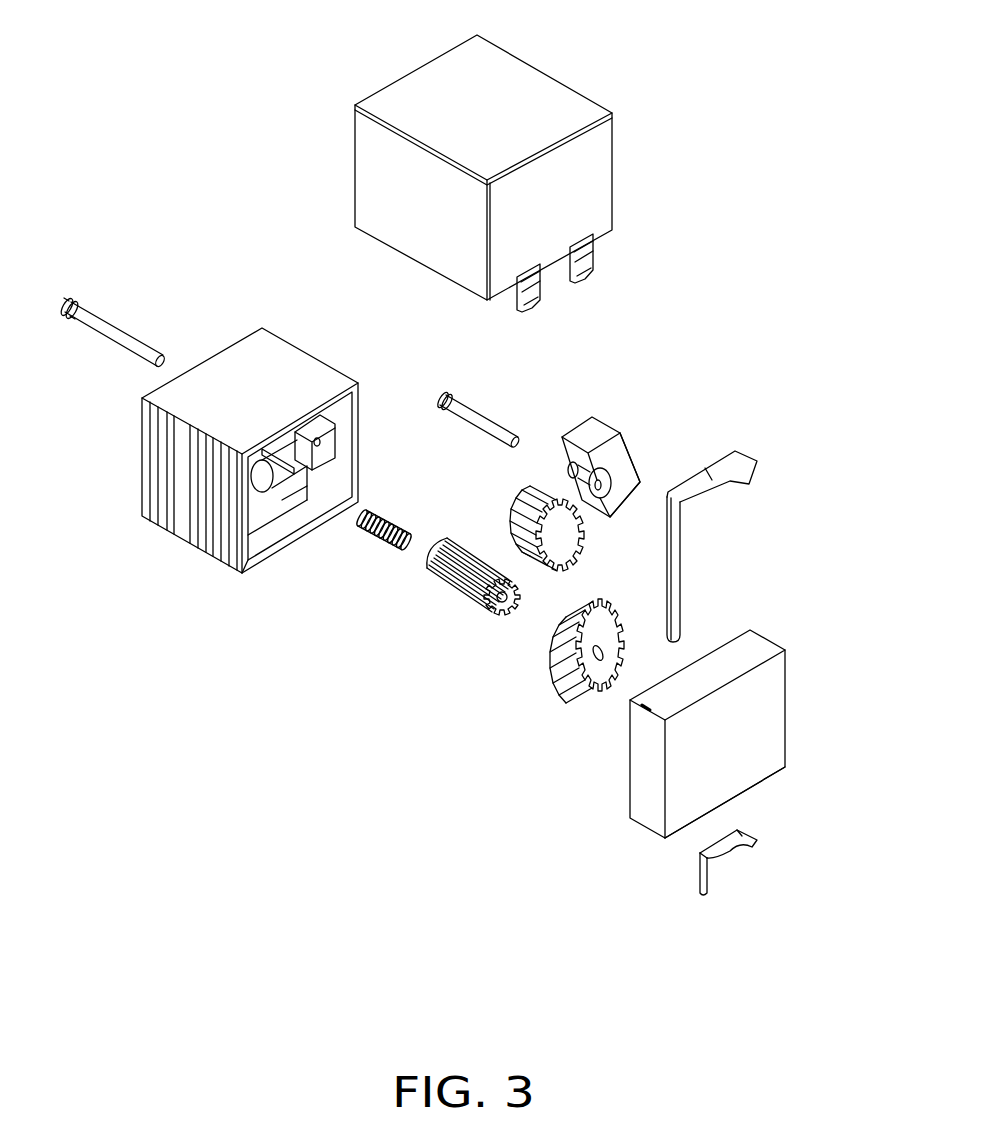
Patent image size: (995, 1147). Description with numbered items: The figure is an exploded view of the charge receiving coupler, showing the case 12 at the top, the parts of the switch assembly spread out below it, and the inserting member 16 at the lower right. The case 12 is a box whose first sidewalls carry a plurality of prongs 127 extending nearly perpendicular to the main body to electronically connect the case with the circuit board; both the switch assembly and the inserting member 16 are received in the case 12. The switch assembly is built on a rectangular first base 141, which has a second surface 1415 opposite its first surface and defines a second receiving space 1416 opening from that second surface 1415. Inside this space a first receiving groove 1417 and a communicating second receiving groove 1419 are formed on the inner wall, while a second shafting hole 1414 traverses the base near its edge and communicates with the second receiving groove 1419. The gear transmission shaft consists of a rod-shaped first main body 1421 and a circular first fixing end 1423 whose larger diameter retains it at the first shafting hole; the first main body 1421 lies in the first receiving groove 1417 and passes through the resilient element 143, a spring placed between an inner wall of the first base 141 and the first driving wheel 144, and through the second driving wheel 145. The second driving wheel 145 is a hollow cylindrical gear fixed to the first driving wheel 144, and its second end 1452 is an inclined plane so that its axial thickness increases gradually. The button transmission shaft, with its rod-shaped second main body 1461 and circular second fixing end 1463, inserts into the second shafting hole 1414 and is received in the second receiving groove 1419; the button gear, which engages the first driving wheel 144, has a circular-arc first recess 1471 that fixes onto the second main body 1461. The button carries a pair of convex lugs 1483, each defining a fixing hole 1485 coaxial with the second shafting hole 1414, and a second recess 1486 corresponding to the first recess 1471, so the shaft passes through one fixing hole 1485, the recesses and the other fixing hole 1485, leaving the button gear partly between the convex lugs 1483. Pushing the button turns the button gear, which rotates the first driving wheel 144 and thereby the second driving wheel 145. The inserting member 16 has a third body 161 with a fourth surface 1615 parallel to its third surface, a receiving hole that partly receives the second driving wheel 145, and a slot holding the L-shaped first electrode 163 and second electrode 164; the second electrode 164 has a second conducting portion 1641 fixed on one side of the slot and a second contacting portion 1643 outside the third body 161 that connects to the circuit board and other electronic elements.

The case 12 is at (514, 158).
The prongs 127 is at (593, 263).
The first base 141 is at (296, 454).
The second shafting hole 1414 is at (320, 442).
The second surface 1415 is at (245, 552).
The second receiving space 1416 is at (298, 523).
The first receiving groove 1417 is at (262, 477).
The second receiving groove 1419 is at (294, 471).
The first main body 1421 is at (108, 304).
The first fixing end 1423 is at (65, 300).
The resilient element 143 is at (405, 525).
The first driving wheel 144 is at (458, 592).
The second driving wheel 145 is at (547, 678).
The second end 1452 is at (593, 683).
The second main body 1461 is at (470, 397).
The second fixing end 1463 is at (440, 395).
The first recess 1471 is at (573, 530).
The convex lug 1483 is at (568, 446).
The fixing hole 1485 is at (627, 465).
The second recess 1486 is at (568, 468).
The inserting member 16 is at (721, 697).
The third body 161 is at (696, 756).
The fourth surface 1615 is at (680, 795).
The first electrode 163 is at (673, 597).
The second electrode 164 is at (753, 866).
The second conducting portion 1641 is at (727, 845).
The second contacting portion 1643 is at (705, 882).